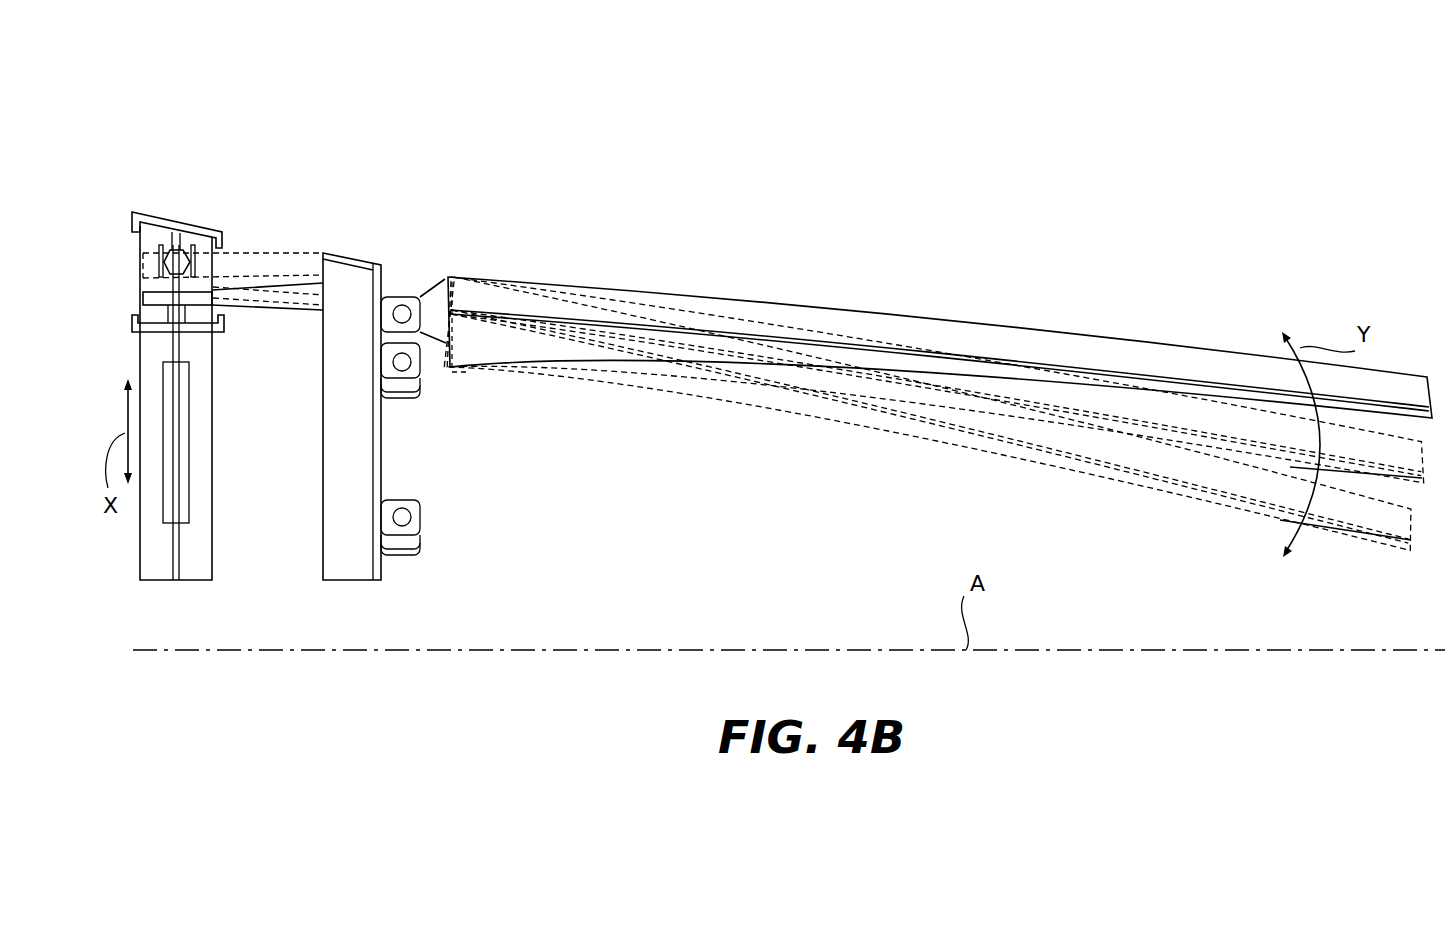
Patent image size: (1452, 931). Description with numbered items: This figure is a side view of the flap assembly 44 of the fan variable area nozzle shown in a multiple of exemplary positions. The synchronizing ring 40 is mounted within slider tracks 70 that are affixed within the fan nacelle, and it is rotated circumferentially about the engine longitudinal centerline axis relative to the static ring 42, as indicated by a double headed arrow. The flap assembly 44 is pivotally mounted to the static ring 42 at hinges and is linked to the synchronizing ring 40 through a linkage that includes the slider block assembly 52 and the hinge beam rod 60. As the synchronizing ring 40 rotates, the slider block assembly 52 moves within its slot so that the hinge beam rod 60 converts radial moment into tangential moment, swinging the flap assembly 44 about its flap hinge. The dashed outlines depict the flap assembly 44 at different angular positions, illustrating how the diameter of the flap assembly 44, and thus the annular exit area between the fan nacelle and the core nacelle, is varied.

The synchronizing ring 40 is at (197, 580).
The static ring 42 is at (360, 580).
The flap assembly 44 is at (1172, 311).
The slider block assembly 52 is at (212, 262).
The hinge beam rod 60 is at (273, 305).
The slider track 70 is at (188, 227).